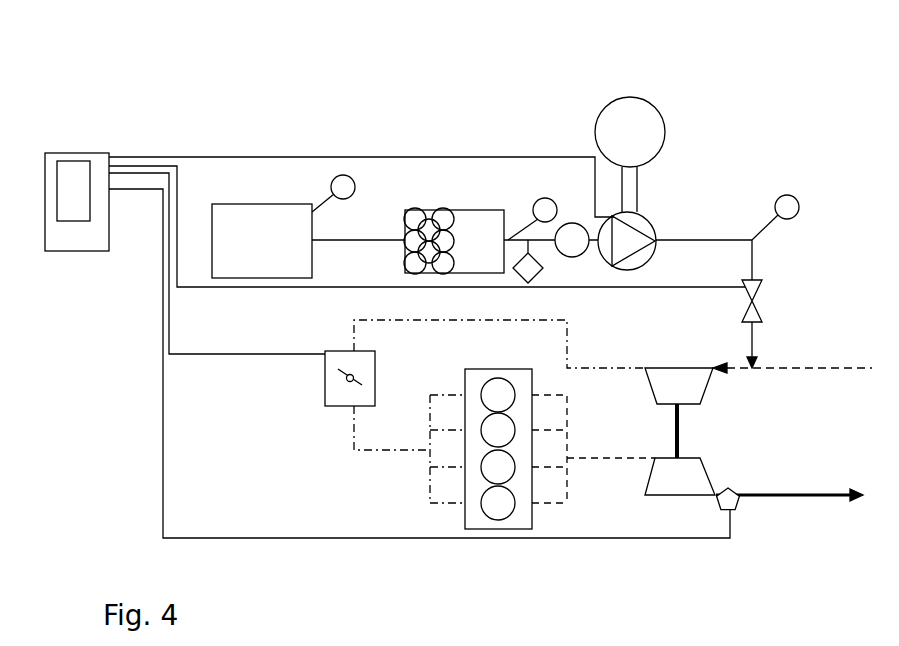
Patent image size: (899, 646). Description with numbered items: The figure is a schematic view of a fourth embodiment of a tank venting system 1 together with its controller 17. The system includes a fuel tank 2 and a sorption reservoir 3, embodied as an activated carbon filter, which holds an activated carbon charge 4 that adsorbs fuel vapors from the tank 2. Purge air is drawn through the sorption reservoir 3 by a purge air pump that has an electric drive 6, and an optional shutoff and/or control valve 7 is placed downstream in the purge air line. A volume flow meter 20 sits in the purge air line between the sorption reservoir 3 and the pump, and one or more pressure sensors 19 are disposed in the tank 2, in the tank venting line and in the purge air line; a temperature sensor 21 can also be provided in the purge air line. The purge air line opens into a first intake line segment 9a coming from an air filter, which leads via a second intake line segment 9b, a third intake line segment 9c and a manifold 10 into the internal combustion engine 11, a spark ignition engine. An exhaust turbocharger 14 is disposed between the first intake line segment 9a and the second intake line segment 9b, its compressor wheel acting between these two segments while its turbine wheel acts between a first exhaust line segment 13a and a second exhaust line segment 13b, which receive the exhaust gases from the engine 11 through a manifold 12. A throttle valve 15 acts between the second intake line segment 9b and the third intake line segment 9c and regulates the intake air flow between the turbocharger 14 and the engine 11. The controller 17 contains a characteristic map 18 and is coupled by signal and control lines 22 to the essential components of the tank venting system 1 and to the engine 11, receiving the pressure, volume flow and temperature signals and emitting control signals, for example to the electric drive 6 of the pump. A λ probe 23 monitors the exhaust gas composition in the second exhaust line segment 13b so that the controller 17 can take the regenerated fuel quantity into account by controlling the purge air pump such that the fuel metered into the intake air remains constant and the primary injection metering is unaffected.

The tank venting system 1 is at (145, 328).
The fuel tank 2 is at (282, 252).
The sorption reservoir 3 is at (482, 252).
The activated carbon charge 4 is at (429, 225).
The electric drive 6 is at (653, 106).
The shutoff and/or control valve 7 is at (762, 300).
The first intake line segment 9a is at (835, 368).
The second intake line segment 9b is at (376, 320).
The third intake line segment 9c is at (385, 450).
The manifold 10 is at (428, 503).
The internal combustion engine 11 is at (473, 529).
The manifold 12 is at (551, 503).
The first exhaust line segment 13a is at (610, 458).
The second exhaust line segment 13b is at (805, 495).
The exhaust turbocharger 14 is at (677, 433).
The throttle valve 15 is at (325, 405).
The controller 17 is at (57, 242).
The characteristic map 18 is at (66, 165).
The pressure sensor 19 is at (346, 175).
The volume flow meter 20 is at (575, 220).
The temperature sensor 21 is at (534, 274).
The signal and control lines 22 is at (193, 156).
The λ probe 23 is at (735, 505).